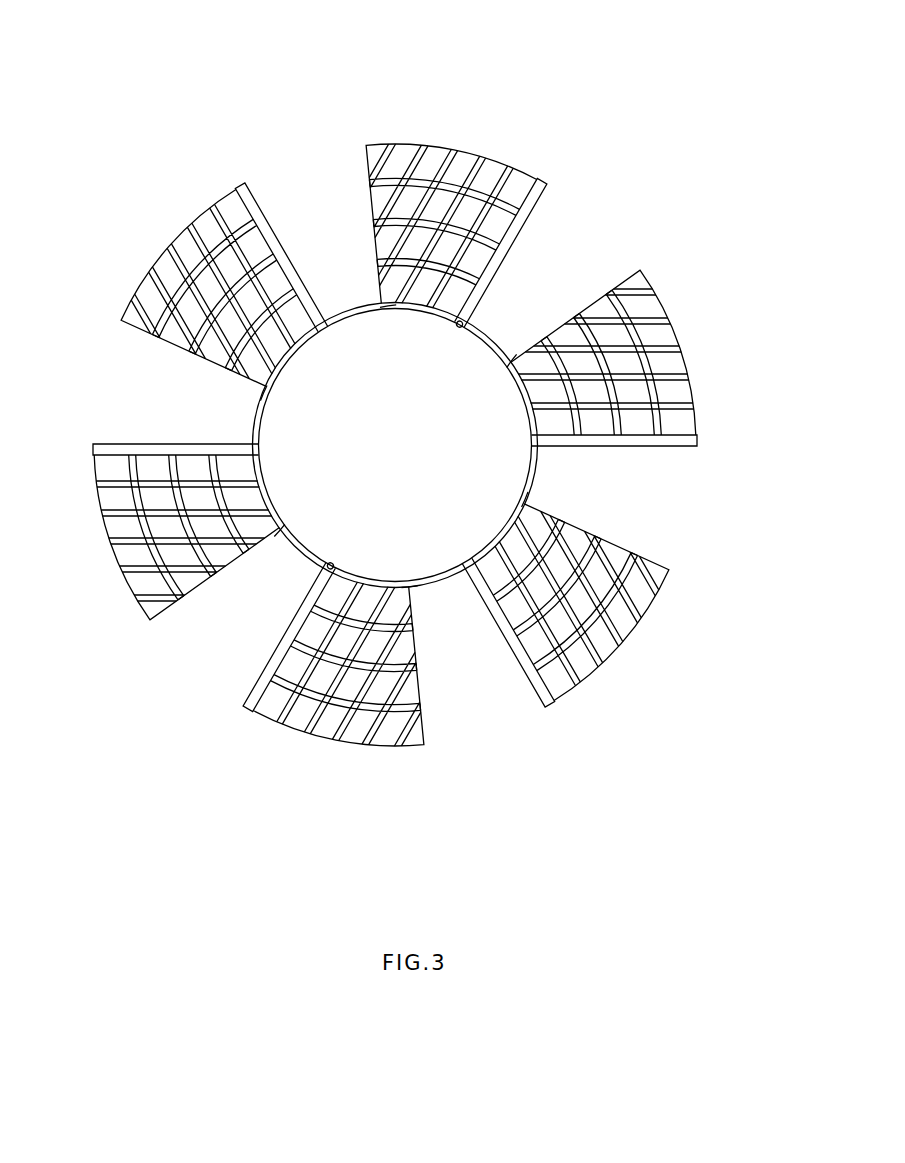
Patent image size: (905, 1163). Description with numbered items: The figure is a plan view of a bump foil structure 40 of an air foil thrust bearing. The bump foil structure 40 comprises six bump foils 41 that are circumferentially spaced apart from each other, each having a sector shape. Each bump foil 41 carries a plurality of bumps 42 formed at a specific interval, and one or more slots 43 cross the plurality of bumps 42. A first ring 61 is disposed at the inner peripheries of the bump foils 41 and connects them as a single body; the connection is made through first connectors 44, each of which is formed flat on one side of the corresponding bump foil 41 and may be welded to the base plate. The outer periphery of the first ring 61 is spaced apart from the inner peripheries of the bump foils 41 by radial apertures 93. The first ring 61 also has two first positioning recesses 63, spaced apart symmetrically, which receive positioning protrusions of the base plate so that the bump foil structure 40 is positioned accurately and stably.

The bump foil structure 40 is at (119, 29).
The bump foil 41 is at (395, 444).
The bumps 42 is at (497, 165).
The slots 43 is at (373, 263).
The first connector 44 is at (547, 188).
The first ring 61 is at (517, 387).
The first positioning recess 63 is at (455, 328).
The radial aperture 93 is at (383, 302).